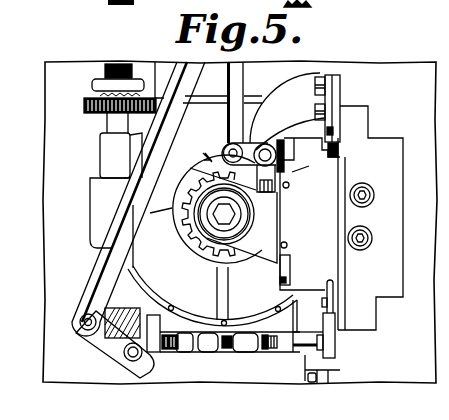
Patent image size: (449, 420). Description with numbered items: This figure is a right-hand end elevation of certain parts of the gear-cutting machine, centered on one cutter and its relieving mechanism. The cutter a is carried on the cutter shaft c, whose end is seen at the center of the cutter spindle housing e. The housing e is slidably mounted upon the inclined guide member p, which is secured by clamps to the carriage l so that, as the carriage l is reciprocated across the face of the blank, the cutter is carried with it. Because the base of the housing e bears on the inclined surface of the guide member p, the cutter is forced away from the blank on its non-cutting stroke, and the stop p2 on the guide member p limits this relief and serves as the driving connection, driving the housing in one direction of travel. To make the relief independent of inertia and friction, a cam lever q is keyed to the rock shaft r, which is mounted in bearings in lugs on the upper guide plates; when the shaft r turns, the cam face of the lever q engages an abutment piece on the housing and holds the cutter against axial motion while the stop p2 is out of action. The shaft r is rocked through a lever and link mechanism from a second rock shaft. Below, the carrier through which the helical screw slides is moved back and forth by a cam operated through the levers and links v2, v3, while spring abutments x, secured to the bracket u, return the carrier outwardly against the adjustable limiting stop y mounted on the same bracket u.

The cutter a is at (196, 172).
The shaft r is at (204, 152).
The cutter shaft c is at (222, 216).
The cutter spindle housing e is at (233, 215).
The cam lever q is at (306, 176).
The stop p2 is at (280, 226).
The guide member p is at (318, 227).
The carriage l is at (370, 218).
The link v2 is at (100, 341).
The link v3 is at (118, 203).
The adjustable limiting stop y is at (176, 352).
The bracket u is at (185, 352).
The spring abutment x is at (250, 345).